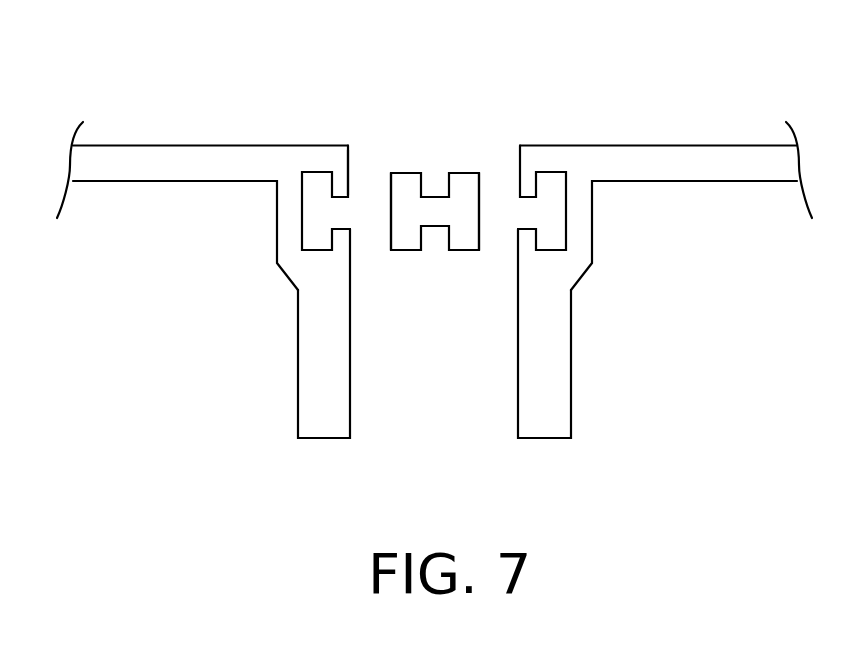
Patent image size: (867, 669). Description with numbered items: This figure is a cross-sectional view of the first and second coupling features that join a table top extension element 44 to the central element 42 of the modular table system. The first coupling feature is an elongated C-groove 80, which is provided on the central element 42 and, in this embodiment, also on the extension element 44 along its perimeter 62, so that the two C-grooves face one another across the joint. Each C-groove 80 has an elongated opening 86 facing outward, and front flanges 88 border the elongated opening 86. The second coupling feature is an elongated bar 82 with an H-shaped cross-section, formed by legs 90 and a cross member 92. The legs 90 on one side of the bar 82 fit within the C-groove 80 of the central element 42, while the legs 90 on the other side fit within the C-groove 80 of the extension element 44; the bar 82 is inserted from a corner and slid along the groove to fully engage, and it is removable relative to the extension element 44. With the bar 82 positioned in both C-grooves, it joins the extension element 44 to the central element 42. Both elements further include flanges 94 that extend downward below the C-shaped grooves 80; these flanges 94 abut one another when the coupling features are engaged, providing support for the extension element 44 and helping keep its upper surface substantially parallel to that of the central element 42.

The central element 42 is at (720, 152).
The extension element 44 is at (126, 153).
The perimeter 62 is at (355, 163).
The C-groove 80 is at (320, 190).
The H-shaped bar 82 is at (407, 168).
The elongated opening 86 is at (323, 215).
The front flanges 88 is at (528, 208).
The legs 90 is at (405, 233).
The cross member 92 is at (436, 202).
The flanges 94 is at (310, 402).